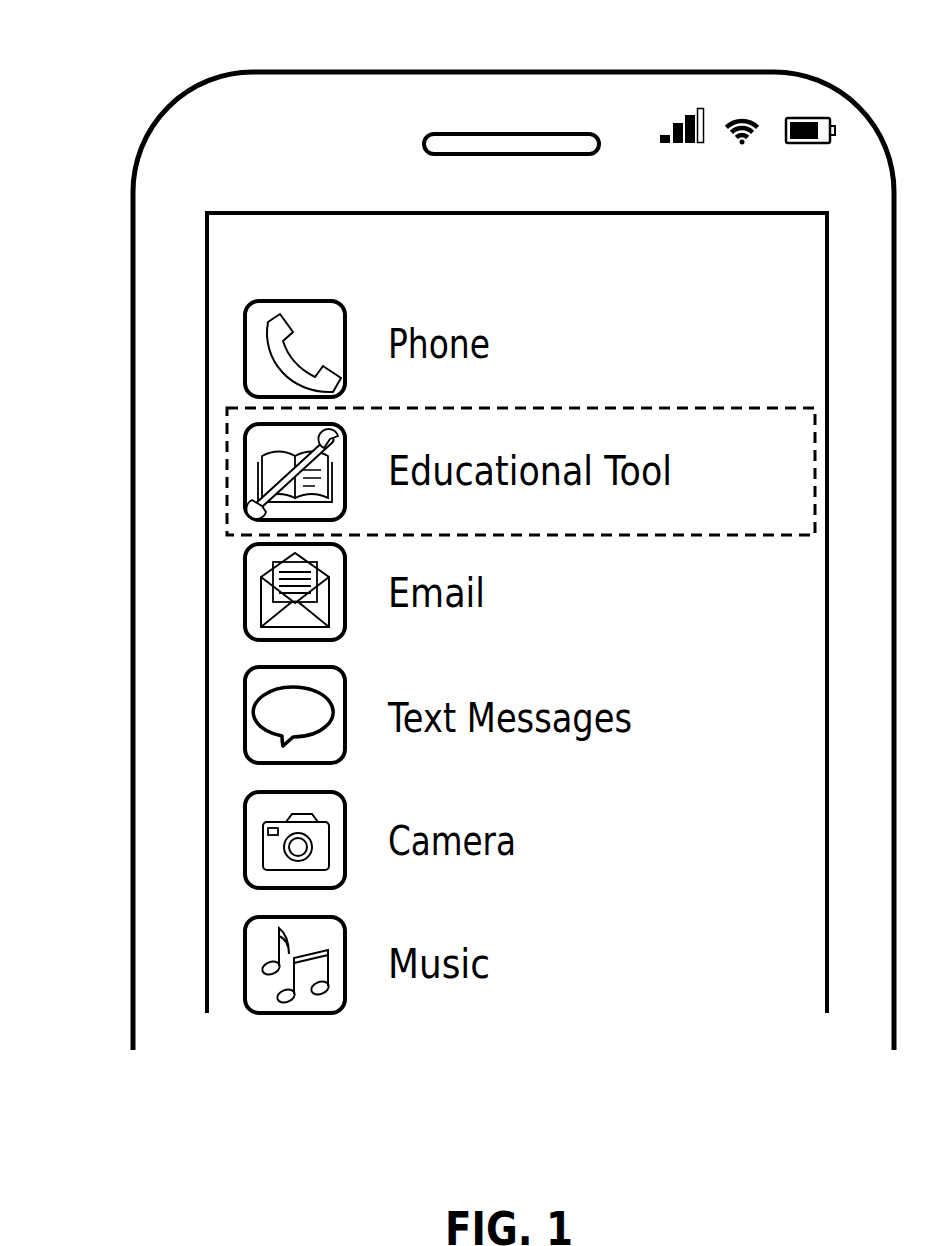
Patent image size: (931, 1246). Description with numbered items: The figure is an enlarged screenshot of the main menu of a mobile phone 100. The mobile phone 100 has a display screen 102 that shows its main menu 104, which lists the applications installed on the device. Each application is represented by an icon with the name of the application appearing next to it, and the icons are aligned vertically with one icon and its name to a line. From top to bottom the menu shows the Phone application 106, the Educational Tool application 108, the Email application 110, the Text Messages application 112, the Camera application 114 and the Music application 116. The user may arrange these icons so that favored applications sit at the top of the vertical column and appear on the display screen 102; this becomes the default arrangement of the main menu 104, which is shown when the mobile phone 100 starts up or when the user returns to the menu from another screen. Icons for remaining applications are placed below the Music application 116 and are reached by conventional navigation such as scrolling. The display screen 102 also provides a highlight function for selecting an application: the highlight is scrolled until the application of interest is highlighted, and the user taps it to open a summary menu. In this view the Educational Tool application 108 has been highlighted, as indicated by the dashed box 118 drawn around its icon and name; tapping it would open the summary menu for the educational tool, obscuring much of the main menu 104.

The mobile phone 100 is at (697, 72).
The display screen 102 is at (399, 212).
The main menu 104 is at (572, 278).
The Phone application 106 is at (244, 350).
The Educational Tool application 108 is at (244, 470).
The Email application 110 is at (244, 588).
The Text Messages application 112 is at (244, 718).
The Camera application 114 is at (244, 836).
The Music application 116 is at (244, 960).
The dashed box 118 is at (670, 408).